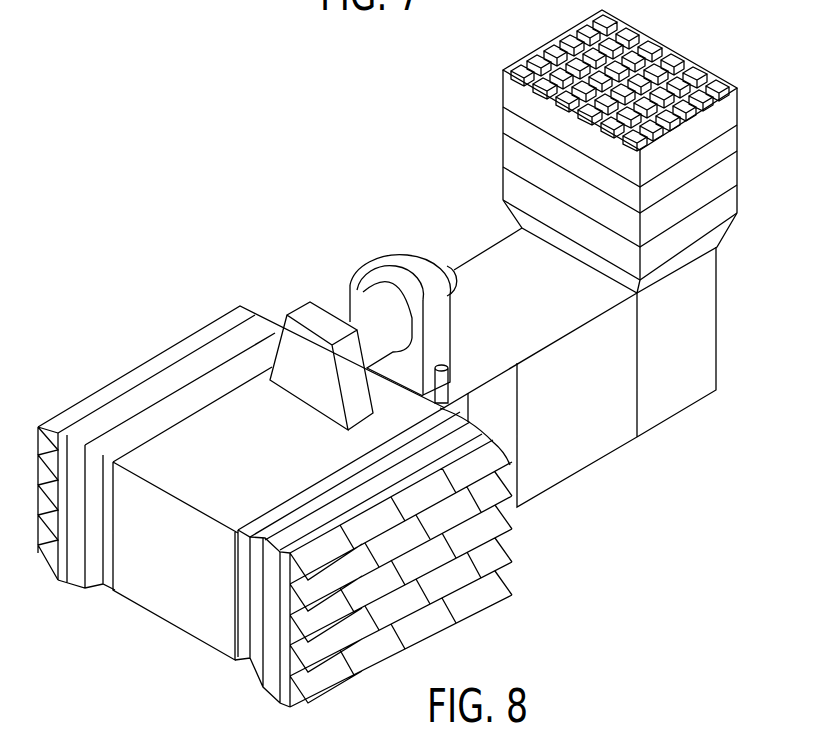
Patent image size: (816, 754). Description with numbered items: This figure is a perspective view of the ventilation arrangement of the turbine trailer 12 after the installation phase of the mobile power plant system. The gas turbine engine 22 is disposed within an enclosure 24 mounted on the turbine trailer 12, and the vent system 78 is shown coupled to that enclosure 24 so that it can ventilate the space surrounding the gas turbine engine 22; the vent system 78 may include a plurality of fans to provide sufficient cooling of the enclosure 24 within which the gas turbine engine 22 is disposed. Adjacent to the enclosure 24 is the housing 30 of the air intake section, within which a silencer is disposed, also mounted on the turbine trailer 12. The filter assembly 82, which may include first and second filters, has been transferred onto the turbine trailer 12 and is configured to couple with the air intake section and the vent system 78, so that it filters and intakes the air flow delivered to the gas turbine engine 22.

The turbine trailer 12 is at (126, 314).
The gas turbine engine 22 is at (693, 357).
The enclosure 24 is at (740, 0).
The housing 30 is at (163, 623).
The vent system 78 is at (402, 246).
The filter assembly 82 is at (120, 361).